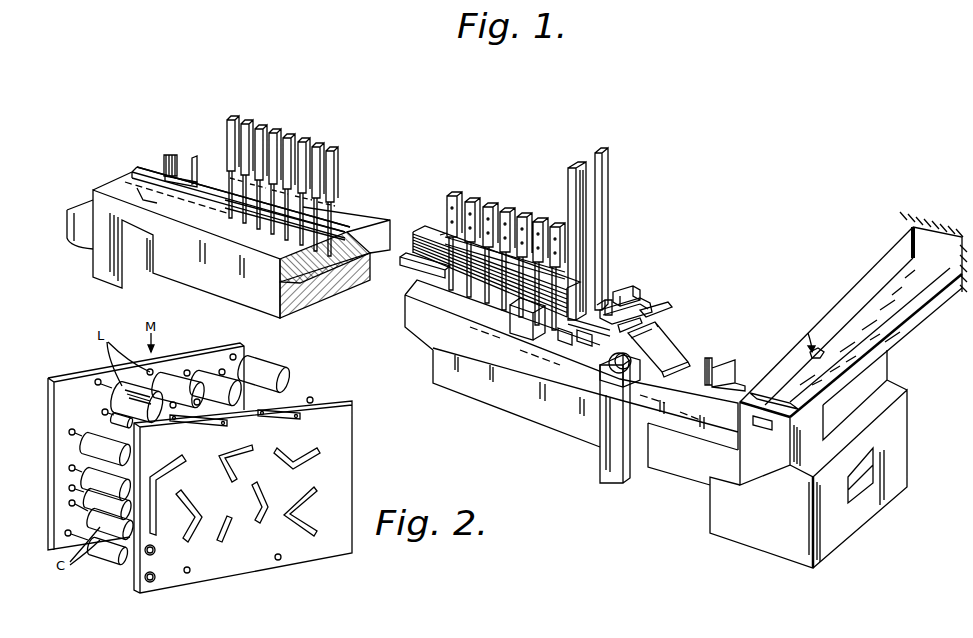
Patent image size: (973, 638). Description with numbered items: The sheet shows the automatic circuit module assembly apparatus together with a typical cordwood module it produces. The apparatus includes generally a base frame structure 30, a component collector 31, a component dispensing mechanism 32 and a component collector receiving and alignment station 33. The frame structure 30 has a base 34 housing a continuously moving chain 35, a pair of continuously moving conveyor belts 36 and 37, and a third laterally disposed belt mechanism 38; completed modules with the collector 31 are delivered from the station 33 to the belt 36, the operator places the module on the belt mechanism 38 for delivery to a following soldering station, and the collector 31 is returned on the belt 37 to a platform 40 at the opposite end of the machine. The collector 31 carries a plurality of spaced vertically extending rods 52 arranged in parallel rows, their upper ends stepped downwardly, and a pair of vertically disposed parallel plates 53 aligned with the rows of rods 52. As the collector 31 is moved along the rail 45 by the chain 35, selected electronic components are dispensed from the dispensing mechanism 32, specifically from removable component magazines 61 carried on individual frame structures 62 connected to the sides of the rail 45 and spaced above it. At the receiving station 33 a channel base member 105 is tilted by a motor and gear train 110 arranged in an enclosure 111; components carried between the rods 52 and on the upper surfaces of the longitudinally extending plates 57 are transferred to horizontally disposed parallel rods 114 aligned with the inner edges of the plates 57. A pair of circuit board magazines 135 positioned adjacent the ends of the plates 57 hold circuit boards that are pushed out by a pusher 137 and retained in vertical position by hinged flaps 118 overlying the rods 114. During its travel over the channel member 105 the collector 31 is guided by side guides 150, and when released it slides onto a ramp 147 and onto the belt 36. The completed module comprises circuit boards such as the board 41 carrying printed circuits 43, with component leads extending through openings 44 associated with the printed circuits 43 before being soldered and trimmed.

In FIG. 1, the base frame structure 30 is at (414, 239).
In FIG. 1, the component collector 31 is at (182, 148).
In FIG. 1, the component dispensing mechanism 32 is at (340, 143).
In FIG. 1, the component collector receiving and alignment station 33 is at (558, 316).
In FIG. 1, the base 34 is at (196, 242).
In FIG. 1, the continuous moving chain 35 is at (122, 178).
In FIG. 1, the conveyor belt 36 is at (710, 356).
In FIG. 1, the conveyor belt 37 is at (860, 482).
In FIG. 1, the third laterally disposed belt mechanism 38 is at (885, 325).
In FIG. 1, the platform 40 is at (67, 210).
In FIG. 2, the circuit board 41 is at (256, 500).
In FIG. 2, the printed circuit 43 is at (262, 520).
In FIG. 2, the opening 44 is at (232, 530).
In FIG. 1, the rail 45 is at (143, 165).
In FIG. 1, the rods 52 is at (169, 155).
In FIG. 1, the plates 53 is at (197, 167).
In FIG. 1, the longitudinally extending plates 57 is at (440, 274).
In FIG. 1, the component magazines 61 is at (250, 118).
In FIG. 1, the frame structures 62 is at (312, 270).
In FIG. 1, the channel base member 105 is at (658, 314).
In FIG. 1, the motor and gear train 110 is at (610, 372).
In FIG. 1, the enclosure 111 is at (640, 372).
In FIG. 1, the horizontally disposed parallel rods 114 is at (603, 300).
In FIG. 1, the flap 118 is at (622, 292).
In FIG. 1, the circuit board magazines 135 is at (608, 222).
In FIG. 1, the pusher 137 is at (558, 333).
In FIG. 1, the ramp 147 is at (672, 332).
In FIG. 1, the side guides 150 is at (640, 306).